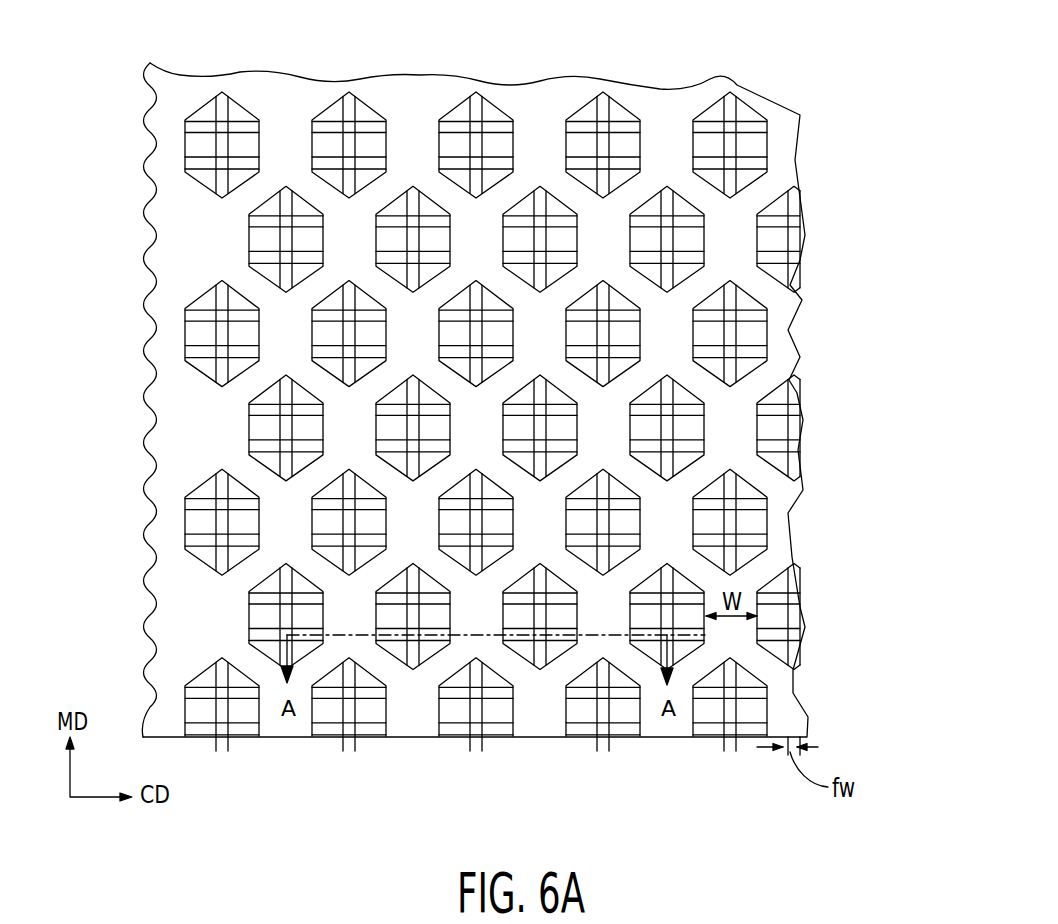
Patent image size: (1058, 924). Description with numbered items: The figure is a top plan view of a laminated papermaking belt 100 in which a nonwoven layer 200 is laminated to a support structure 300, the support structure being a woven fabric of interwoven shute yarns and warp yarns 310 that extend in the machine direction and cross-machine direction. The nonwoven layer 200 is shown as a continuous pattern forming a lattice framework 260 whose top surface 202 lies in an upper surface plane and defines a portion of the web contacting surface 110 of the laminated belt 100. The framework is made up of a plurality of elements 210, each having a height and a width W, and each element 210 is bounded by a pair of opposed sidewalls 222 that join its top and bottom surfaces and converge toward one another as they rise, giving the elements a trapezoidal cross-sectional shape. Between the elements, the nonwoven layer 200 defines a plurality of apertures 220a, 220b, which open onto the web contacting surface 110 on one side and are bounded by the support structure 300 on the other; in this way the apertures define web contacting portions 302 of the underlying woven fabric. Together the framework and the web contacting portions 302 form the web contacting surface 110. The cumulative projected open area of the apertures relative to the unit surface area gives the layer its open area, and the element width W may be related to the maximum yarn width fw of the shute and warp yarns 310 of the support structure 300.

The laminated belt 100 is at (684, 35).
The nonwoven layer 200 is at (278, 97).
The aperture 220a is at (368, 142).
The aperture 220b is at (497, 142).
The web contacting surface 110 is at (557, 345).
The top surface 202 is at (775, 373).
The lattice framework 260 is at (768, 477).
The web contacting portion 302 is at (820, 616).
The sidewall 222 is at (765, 621).
The element 210 is at (547, 720).
The warp yarn 310 is at (457, 730).
The support structure 300 is at (733, 725).